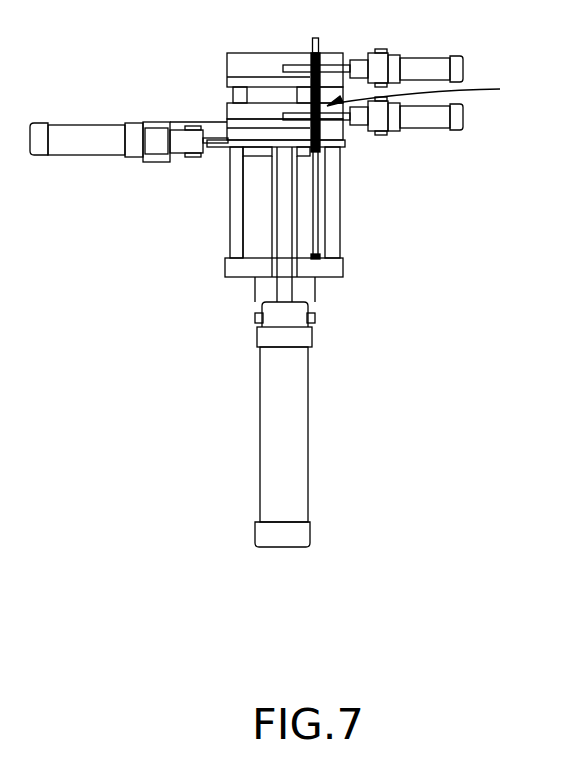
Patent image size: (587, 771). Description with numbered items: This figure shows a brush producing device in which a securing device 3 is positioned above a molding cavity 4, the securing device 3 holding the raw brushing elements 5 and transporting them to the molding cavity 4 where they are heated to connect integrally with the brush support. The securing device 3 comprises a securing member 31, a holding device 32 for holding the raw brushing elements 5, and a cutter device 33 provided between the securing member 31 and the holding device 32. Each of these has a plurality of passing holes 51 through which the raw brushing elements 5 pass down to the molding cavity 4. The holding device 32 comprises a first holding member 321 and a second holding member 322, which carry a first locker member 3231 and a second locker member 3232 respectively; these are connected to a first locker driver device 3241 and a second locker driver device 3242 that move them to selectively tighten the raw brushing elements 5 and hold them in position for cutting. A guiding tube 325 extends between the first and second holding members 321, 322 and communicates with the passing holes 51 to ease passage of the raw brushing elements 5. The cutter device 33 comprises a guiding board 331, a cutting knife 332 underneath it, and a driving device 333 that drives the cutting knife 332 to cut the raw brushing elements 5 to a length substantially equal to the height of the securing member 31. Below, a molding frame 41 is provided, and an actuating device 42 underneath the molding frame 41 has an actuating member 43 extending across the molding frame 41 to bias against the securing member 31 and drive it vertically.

The securing device 3 is at (500, 125).
The securing member 31 is at (340, 150).
The holding device 32 is at (362, 63).
The first holding member 321 is at (238, 66).
The second holding member 322 is at (233, 110).
The first locker member 3231 is at (335, 68).
The second locker member 3232 is at (345, 127).
The first locker driver device 3241 is at (413, 62).
The second locker driver device 3242 is at (440, 115).
The guiding tube 325 is at (302, 92).
The cutter device 33 is at (198, 156).
The guiding board 331 is at (232, 130).
The cutting knife 332 is at (225, 146).
The driving device 333 is at (93, 148).
The molding cavity 4 is at (313, 258).
The molding frame 41 is at (343, 273).
The actuating device 42 is at (293, 434).
The actuating member 43 is at (287, 222).
The raw brushing elements 5 is at (318, 192).
The passing holes 51 is at (426, 93).